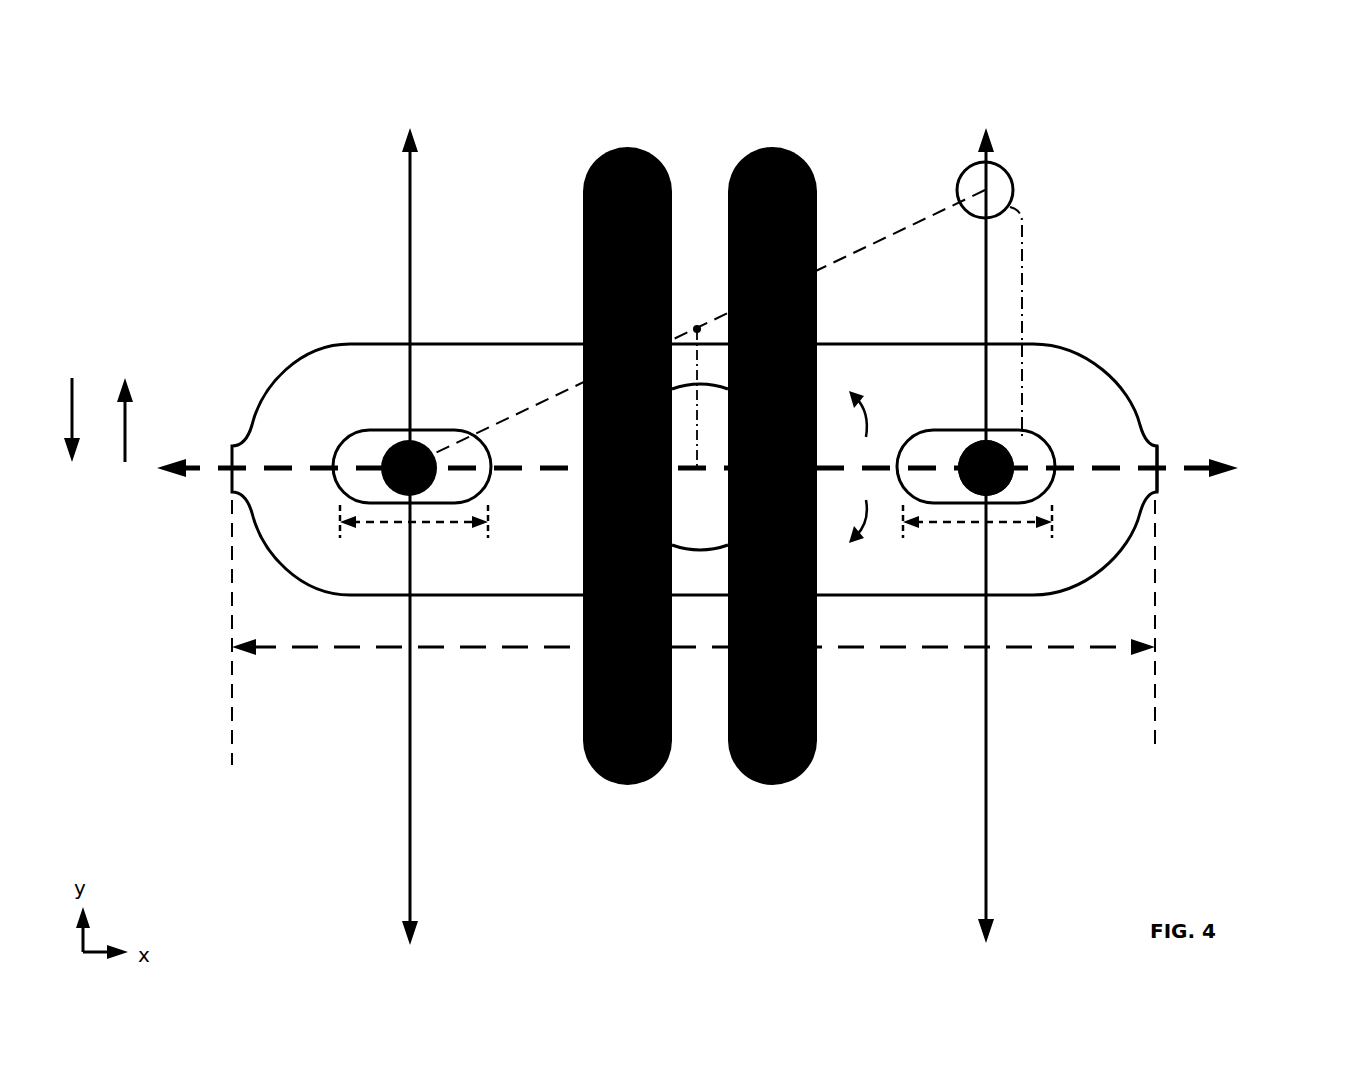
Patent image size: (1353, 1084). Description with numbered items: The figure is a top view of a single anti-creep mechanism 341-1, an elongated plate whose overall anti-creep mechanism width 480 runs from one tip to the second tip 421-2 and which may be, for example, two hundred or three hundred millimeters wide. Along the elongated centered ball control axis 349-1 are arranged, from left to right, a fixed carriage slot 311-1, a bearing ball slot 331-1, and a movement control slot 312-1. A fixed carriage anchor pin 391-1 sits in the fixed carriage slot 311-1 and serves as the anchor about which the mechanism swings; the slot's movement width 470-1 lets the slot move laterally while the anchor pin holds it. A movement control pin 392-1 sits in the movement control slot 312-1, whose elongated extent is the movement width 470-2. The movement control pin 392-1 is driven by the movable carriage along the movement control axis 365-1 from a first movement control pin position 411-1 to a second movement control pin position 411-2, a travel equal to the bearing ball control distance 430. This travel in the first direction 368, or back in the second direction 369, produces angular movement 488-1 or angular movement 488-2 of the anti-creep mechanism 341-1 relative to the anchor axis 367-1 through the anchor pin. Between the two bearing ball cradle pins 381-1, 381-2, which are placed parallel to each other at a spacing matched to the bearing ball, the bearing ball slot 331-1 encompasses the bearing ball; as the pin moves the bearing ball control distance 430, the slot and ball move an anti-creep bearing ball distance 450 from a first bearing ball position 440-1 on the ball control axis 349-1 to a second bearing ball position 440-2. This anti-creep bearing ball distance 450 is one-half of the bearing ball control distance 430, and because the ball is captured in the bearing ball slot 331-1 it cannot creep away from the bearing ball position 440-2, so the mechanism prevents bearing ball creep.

The anti-creep mechanism 341-1 is at (462, 373).
The bearing ball cradle pin 381-1 is at (590, 745).
The bearing ball cradle pin 381-2 is at (780, 778).
The bearing ball position 440-2 is at (697, 329).
The bearing ball position 440-1 is at (697, 470).
The bearing ball slot 331-1 is at (707, 552).
The anti-creep bearing ball distance 450 is at (697, 407).
The ball control axis 349-1 is at (187, 470).
The fixed carriage slot 311-1 is at (350, 440).
The fixed carriage anchor pin 391-1 is at (393, 440).
The movement control slot 312-1 is at (1008, 452).
The movement control pin 392-1 is at (1010, 455).
The first movement control pin position 411-1 is at (1010, 480).
The second tip 421-2 is at (1160, 448).
The anchor axis 367-1 is at (409, 848).
The movement control axis 365-1 is at (986, 888).
The movement width 470-1 is at (400, 522).
The movement width 470-2 is at (1002, 522).
The anti-creep mechanism width 480 is at (963, 650).
The second movement control pin position 411-2 is at (1007, 183).
The bearing ball control distance 430 is at (1022, 330).
The second direction 369 is at (72, 436).
The first direction 368 is at (125, 422).
The angular movement 488-1 is at (866, 437).
The angular movement 488-2 is at (866, 500).